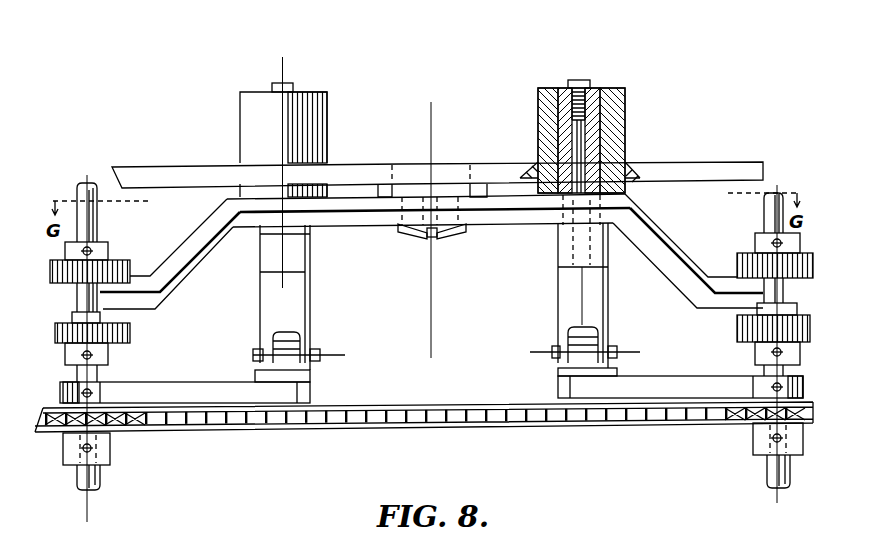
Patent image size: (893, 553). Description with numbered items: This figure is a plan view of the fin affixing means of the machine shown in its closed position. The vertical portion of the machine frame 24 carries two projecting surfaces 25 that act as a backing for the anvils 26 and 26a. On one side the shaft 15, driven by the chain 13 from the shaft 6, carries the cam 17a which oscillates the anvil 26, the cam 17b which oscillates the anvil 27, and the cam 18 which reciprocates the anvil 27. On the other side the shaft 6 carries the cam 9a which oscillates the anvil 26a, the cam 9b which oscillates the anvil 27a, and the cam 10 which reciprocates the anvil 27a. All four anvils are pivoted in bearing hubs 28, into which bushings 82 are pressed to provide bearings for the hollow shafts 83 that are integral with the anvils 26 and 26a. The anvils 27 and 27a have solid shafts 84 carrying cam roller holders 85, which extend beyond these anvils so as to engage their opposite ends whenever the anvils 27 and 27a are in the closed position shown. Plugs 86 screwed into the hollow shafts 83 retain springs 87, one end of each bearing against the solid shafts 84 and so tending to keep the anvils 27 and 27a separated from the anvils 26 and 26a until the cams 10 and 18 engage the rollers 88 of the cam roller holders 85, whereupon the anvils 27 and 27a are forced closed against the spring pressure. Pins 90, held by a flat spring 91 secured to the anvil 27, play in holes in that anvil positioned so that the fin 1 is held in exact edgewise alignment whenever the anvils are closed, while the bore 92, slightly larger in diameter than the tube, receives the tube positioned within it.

The fin 1 is at (415, 210).
The shaft 6 is at (767, 483).
The cam 9a is at (740, 257).
The cam 9b is at (737, 327).
The cam 10 is at (682, 383).
The chain 13 is at (348, 430).
The shaft 15 is at (100, 482).
The cam 17a is at (117, 261).
The cam 17b is at (128, 335).
The cam 18 is at (148, 388).
The machine frame 24 is at (168, 167).
The projecting surfaces 25 is at (381, 186).
The anvil 26 is at (223, 212).
The anvil 26a is at (633, 203).
The anvil 27 is at (235, 232).
The anvil 27a is at (642, 237).
The bearing hubs 28 is at (326, 113).
The bushings 82 is at (618, 87).
The hollow shafts 83 is at (592, 88).
The solid shafts 84 is at (587, 145).
The cam roller holders 85 is at (302, 308).
The plugs 86 is at (286, 84).
The springs 87 is at (552, 103).
The rollers 88 is at (282, 347).
The pins 90 is at (398, 232).
The flat spring 91 is at (438, 237).
The bore 92 is at (434, 203).